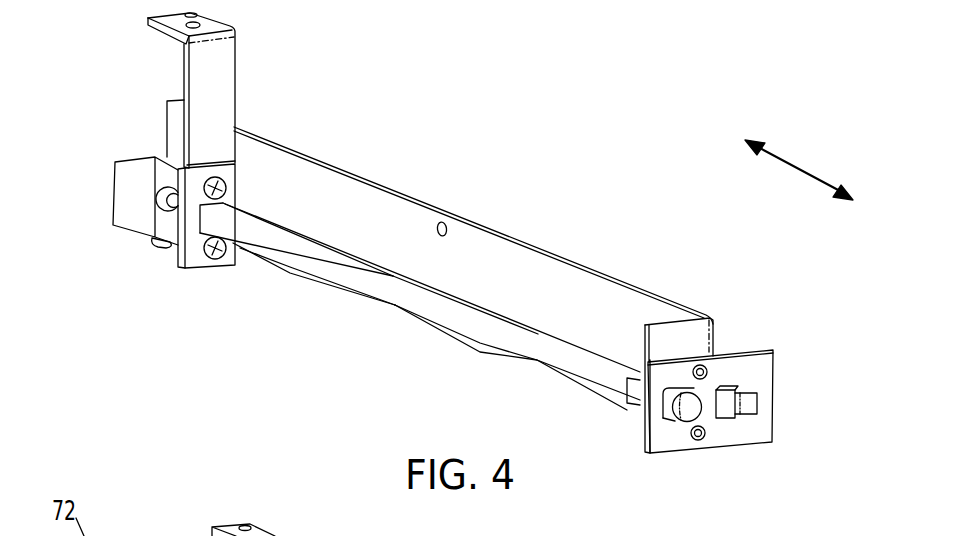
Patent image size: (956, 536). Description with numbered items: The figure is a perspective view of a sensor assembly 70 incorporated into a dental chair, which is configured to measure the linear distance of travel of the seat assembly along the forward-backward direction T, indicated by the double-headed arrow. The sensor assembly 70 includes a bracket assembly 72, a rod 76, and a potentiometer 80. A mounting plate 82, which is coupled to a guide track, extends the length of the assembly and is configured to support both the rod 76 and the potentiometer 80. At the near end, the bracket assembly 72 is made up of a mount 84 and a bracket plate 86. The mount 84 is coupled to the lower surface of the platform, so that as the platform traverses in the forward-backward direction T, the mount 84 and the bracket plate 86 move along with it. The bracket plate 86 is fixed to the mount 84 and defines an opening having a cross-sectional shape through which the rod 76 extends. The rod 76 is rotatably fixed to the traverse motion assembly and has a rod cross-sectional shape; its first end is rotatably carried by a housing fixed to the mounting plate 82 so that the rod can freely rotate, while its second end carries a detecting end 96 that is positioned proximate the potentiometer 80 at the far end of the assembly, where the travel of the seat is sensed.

The sensor assembly 70 is at (414, 154).
The bracket assembly 72 is at (167, 82).
The rod 76 is at (347, 280).
The potentiometer 80 is at (744, 413).
The mounting plate 82 is at (547, 270).
The mount 84 is at (215, 88).
The bracket plate 86 is at (192, 268).
The detecting end 96 is at (686, 421).
The forward-backward direction T is at (790, 162).